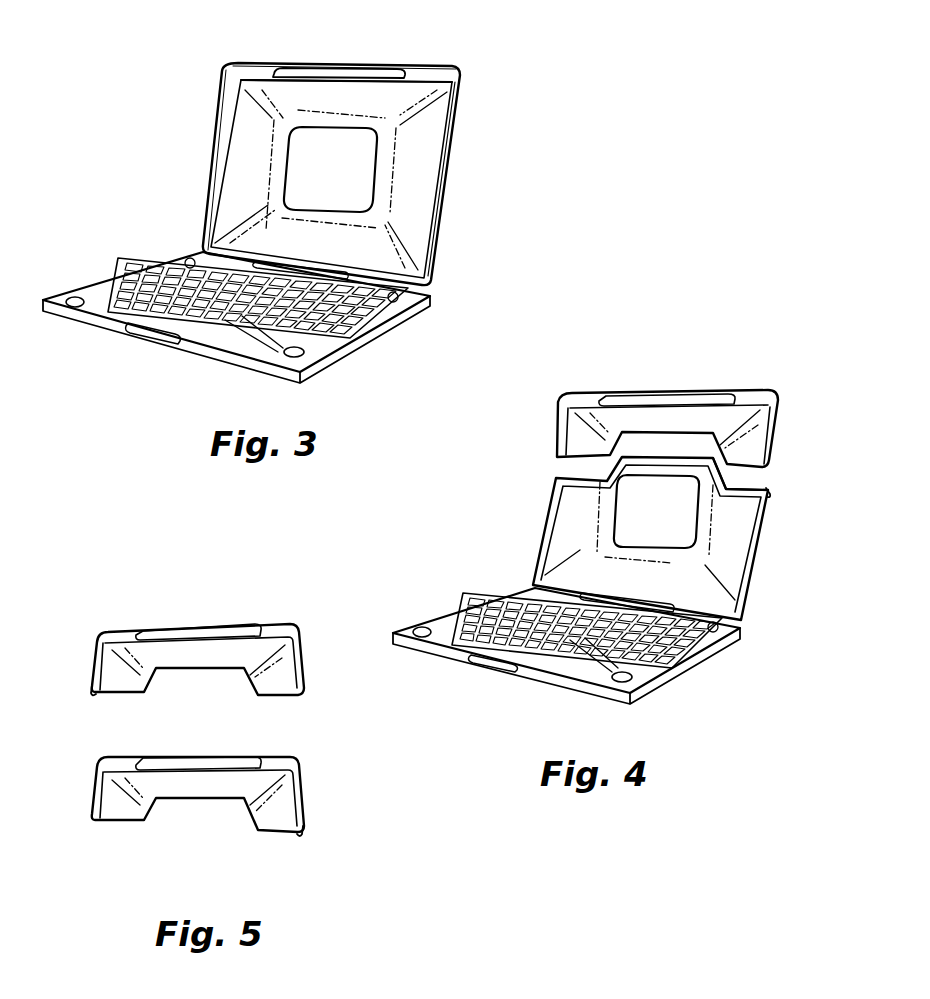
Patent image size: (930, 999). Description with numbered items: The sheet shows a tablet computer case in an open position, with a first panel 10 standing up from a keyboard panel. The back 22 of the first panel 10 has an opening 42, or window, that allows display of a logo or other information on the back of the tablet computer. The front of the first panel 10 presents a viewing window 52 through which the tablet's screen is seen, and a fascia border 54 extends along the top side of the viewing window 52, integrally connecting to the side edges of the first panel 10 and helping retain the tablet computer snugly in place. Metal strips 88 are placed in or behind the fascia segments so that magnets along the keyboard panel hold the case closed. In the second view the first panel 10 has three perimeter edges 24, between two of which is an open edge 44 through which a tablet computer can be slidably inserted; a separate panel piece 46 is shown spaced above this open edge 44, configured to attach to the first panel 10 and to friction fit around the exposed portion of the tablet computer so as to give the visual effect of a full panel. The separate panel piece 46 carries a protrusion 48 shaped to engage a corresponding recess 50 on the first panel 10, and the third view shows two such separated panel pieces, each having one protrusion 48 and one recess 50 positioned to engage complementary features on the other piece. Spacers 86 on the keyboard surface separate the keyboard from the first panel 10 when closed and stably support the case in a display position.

In FIG. 3, the first panel 10 is at (201, 154).
In FIG. 4, the first panel 10 is at (538, 504).
In FIG. 3, the back 22 is at (257, 170).
In FIG. 4, the perimeter edges 24 is at (542, 557).
In FIG. 3, the opening 42 is at (344, 170).
In FIG. 4, the opening 42 is at (656, 511).
In FIG. 4, the open edge 44 is at (750, 485).
In FIG. 4, the separate panel piece 46 is at (591, 373).
In FIG. 5, the separate panel piece 46 is at (116, 634).
In FIG. 4, the protrusion 48 is at (770, 492).
In FIG. 5, the protrusion 48 is at (93, 690).
In FIG. 5, the recess 50 is at (298, 707).
In FIG. 3, the viewing window 52 is at (467, 75).
In FIG. 3, the fascia border 54 is at (428, 72).
In FIG. 3, the spacers 86 is at (77, 307).
In FIG. 4, the spacers 86 is at (420, 640).
In FIG. 3, the metal strips 88 is at (308, 72).